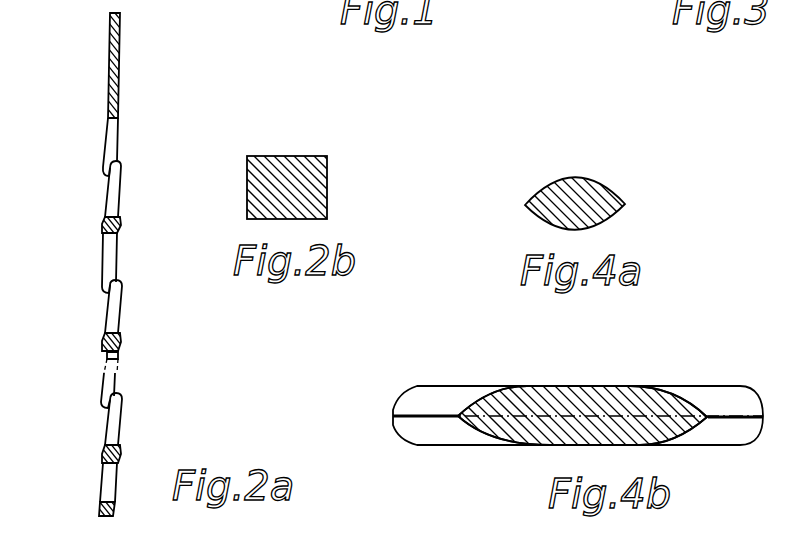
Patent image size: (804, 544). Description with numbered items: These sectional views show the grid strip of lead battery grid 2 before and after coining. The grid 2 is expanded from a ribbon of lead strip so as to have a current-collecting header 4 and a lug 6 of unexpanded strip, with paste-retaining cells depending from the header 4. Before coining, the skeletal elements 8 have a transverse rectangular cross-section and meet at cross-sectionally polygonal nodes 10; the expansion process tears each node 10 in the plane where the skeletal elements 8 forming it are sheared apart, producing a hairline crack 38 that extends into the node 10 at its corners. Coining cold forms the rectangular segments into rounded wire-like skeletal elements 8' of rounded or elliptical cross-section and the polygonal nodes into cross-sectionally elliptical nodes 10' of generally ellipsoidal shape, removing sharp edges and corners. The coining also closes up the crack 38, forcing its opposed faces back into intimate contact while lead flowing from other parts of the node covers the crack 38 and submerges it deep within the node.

In FIG. 2A, the grid 2 is at (108, 80).
In FIG. 2A, the current-collecting header 4 is at (117, 108).
In FIG. 2A, the lug 6 is at (115, 55).
In FIG. 2A, the skeletal elements 8 is at (122, 317).
In FIG. 2B, the skeletal elements 8 is at (285, 172).
In FIG. 2A, the node 10 is at (130, 326).
In FIG. 4A, the rounded wire-like skeletal elements 8' is at (570, 190).
In FIG. 4B, the rounded wire-like skeletal elements 8' is at (578, 392).
In FIG. 4B, the cross-sectionally elliptical nodes 10' is at (578, 394).
In FIG. 4B, the hairline crack 38 is at (505, 418).